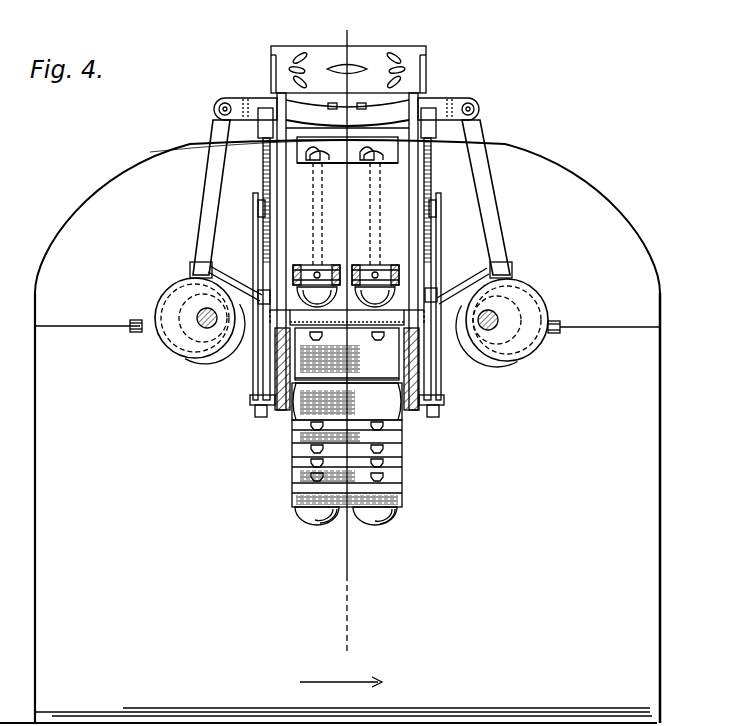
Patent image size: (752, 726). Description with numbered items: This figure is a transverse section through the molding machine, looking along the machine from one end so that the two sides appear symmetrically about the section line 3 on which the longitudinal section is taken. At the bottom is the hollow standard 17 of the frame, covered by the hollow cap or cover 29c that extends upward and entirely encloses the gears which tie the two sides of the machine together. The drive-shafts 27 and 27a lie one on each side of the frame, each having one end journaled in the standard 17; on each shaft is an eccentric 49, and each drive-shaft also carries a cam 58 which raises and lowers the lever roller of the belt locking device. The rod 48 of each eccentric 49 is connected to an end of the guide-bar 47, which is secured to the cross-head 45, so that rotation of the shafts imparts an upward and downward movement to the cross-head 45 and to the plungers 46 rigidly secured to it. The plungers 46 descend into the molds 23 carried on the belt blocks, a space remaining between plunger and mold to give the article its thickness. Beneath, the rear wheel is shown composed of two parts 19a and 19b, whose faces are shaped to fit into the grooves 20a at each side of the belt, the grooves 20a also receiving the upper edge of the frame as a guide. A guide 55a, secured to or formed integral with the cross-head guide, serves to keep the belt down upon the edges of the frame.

The section line 3 is at (341, 348).
The standard 17 is at (330, 431).
The rear wheel part 19a is at (290, 428).
The rear wheel part 19b is at (400, 416).
The groove 20a is at (290, 468).
The mold 23 is at (323, 522).
The drive-shaft 27 is at (492, 320).
The drive-shaft 27a is at (205, 320).
The hollow cap or cover 29c is at (371, 184).
The cross-head 45 is at (347, 201).
The plunger 46 is at (370, 268).
The guide-bar 47 is at (214, 104).
The rod 48 is at (210, 188).
The eccentric 49 is at (170, 304).
The guide 55a is at (433, 290).
The cam 58 is at (218, 368).